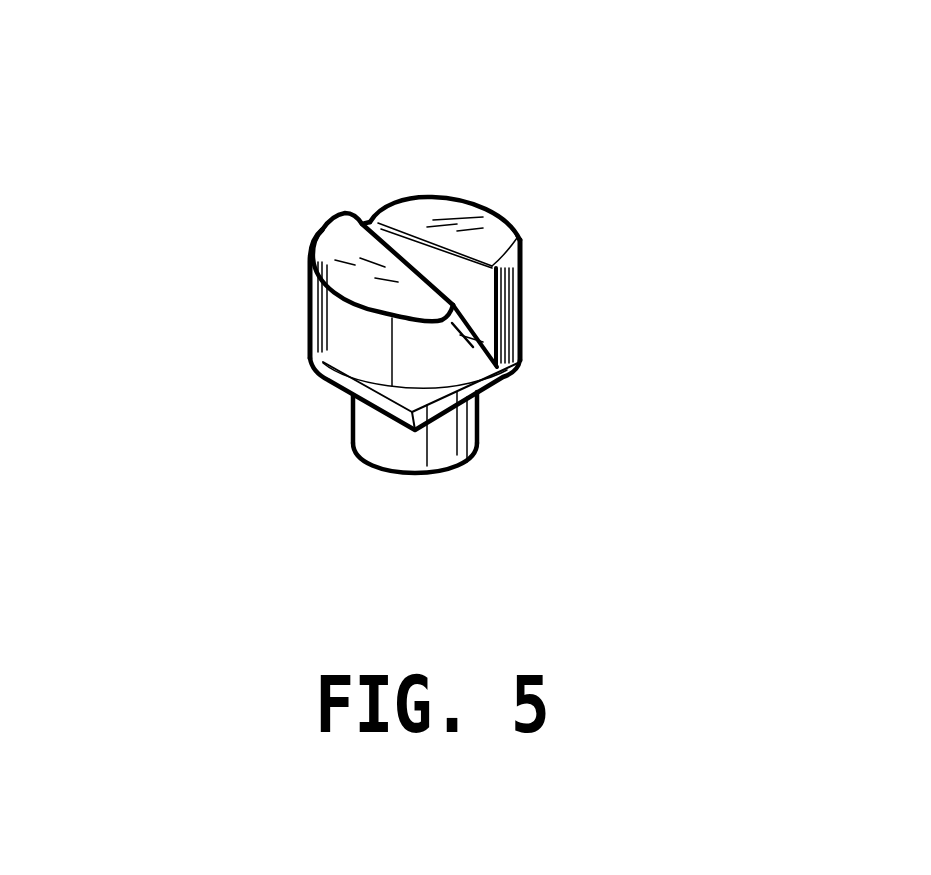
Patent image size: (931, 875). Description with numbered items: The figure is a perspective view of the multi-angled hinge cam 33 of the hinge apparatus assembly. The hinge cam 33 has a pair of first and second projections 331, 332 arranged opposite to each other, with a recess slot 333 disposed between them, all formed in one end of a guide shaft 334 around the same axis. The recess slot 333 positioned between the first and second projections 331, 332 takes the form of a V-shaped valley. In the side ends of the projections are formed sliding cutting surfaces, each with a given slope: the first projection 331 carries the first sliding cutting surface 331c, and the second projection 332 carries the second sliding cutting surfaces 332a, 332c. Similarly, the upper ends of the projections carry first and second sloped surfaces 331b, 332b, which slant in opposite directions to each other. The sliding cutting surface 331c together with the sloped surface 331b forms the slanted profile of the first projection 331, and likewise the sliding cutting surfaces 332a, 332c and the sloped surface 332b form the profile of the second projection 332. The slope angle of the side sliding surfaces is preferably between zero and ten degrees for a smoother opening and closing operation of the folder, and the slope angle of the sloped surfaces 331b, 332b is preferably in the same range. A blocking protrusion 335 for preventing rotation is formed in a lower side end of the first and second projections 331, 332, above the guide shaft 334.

The multi-angled hinge cam 33 is at (424, 255).
The first projection 331 is at (332, 320).
The first sloped surface 331b is at (345, 255).
The first sliding cutting surface 331c is at (460, 335).
The second projection 332 is at (530, 283).
The second sliding cutting surface 332a is at (370, 222).
The second sloped surface 332b is at (452, 225).
The second sliding cutting surface 332c is at (523, 317).
The recess slot 333 is at (520, 236).
The guide shaft 334 is at (448, 437).
The blocking protrusion 335 is at (482, 383).